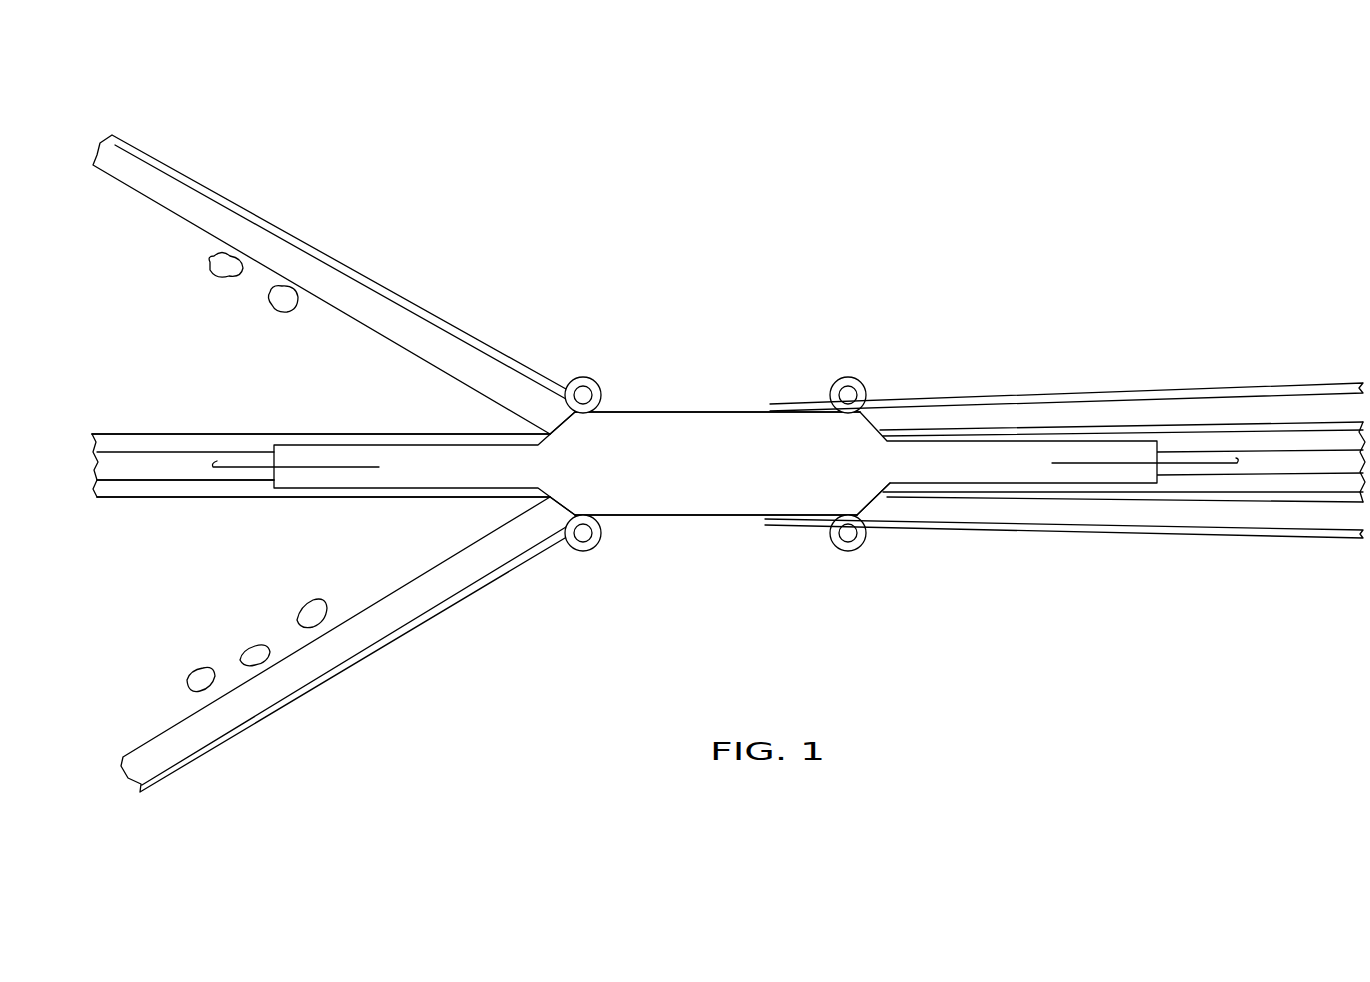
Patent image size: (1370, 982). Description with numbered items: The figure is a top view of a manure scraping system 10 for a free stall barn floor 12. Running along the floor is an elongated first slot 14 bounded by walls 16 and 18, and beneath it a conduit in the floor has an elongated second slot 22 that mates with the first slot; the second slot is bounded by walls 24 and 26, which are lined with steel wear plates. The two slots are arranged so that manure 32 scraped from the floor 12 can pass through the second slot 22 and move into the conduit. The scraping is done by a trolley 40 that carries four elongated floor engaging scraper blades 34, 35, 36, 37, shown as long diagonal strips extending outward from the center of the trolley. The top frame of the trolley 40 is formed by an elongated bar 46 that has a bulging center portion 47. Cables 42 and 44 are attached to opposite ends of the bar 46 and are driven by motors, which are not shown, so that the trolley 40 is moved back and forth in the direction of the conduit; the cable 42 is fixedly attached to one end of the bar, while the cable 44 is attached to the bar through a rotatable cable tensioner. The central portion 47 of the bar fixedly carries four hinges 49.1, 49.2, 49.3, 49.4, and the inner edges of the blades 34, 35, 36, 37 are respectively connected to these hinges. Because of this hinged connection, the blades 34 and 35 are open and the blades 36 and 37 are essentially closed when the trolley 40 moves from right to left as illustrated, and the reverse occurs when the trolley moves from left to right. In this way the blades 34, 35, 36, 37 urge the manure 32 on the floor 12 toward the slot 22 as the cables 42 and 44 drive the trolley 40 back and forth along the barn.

The system 10 is at (737, 321).
The free stall barn floor 12 is at (920, 669).
The elongated first slot 14 is at (180, 433).
The wall 16 is at (122, 433).
The wall 18 is at (138, 498).
The elongated second slot 22 is at (110, 465).
The wall 24 is at (203, 452).
The wall 26 is at (180, 485).
The manure 32 is at (222, 262).
The floor engaging scraper blade 34 is at (158, 175).
The floor engaging scraper blade 35 is at (158, 750).
The floor engaging scraper blade 36 is at (1313, 410).
The floor engaging scraper blade 37 is at (1313, 537).
The trolley 40 is at (849, 485).
The cable 42 is at (240, 470).
The cable 44 is at (1218, 462).
The elongated bar 46 is at (993, 457).
The bulging center portion 47 is at (687, 440).
The hinge 49.1 is at (585, 377).
The hinge 49.2 is at (586, 551).
The hinge 49.3 is at (857, 377).
The hinge 49.4 is at (842, 551).